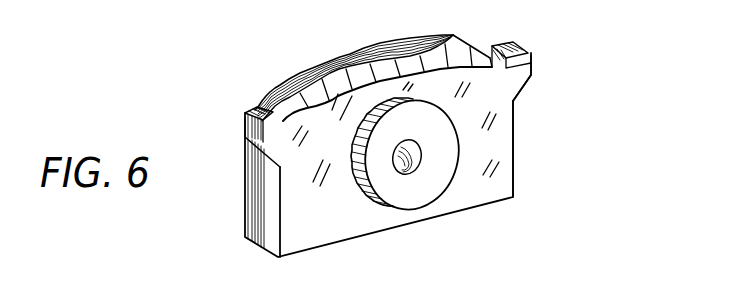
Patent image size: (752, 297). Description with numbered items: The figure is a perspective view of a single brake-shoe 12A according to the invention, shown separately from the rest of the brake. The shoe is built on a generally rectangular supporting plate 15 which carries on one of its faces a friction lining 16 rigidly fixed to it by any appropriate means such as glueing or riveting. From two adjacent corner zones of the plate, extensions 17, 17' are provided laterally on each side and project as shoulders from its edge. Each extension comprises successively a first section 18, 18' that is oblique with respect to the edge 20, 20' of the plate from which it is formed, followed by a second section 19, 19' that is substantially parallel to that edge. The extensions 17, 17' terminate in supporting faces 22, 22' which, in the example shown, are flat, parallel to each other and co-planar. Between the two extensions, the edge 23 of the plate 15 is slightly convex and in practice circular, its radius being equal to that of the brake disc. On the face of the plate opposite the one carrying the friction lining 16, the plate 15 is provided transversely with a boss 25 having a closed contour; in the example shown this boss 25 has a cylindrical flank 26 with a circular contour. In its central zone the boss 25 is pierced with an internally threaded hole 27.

The shoe 12A is at (480, 206).
The supporting plate 15 is at (313, 223).
The friction lining 16 is at (347, 62).
The extension 17 is at (207, 121).
The first section 18 is at (240, 161).
The second section 19 is at (243, 95).
The edge 20 is at (237, 193).
The supporting face 22 is at (264, 93).
The edge 23 is at (414, 63).
The boss 25 is at (435, 198).
The cylindrical flank 26 is at (355, 178).
The internally threaded hole 27 is at (413, 144).
The extension 17' is at (570, 64).
The first section 18' is at (541, 103).
The second section 19' is at (533, 32).
The edge 20' is at (546, 149).
The supporting face 22' is at (505, 34).